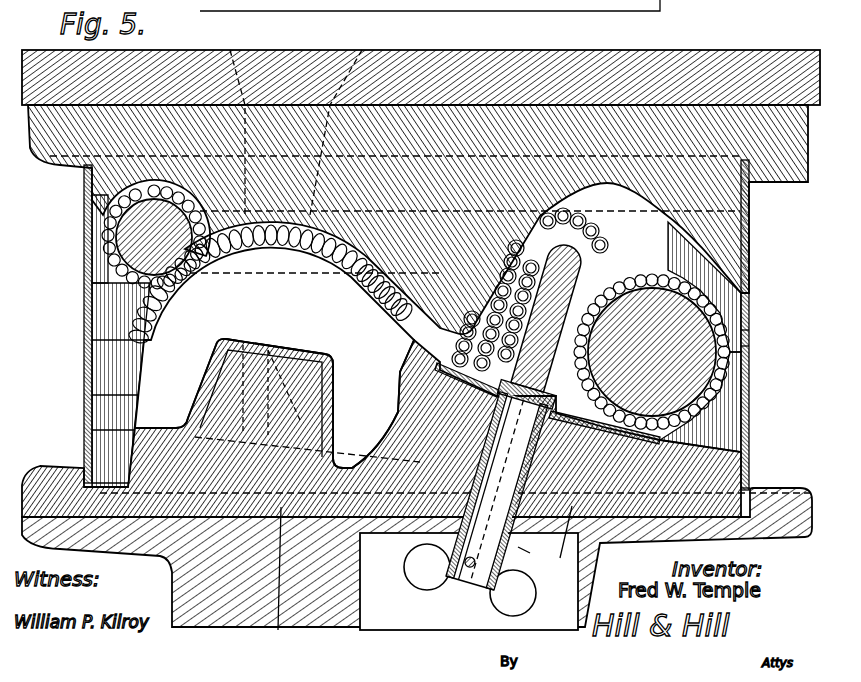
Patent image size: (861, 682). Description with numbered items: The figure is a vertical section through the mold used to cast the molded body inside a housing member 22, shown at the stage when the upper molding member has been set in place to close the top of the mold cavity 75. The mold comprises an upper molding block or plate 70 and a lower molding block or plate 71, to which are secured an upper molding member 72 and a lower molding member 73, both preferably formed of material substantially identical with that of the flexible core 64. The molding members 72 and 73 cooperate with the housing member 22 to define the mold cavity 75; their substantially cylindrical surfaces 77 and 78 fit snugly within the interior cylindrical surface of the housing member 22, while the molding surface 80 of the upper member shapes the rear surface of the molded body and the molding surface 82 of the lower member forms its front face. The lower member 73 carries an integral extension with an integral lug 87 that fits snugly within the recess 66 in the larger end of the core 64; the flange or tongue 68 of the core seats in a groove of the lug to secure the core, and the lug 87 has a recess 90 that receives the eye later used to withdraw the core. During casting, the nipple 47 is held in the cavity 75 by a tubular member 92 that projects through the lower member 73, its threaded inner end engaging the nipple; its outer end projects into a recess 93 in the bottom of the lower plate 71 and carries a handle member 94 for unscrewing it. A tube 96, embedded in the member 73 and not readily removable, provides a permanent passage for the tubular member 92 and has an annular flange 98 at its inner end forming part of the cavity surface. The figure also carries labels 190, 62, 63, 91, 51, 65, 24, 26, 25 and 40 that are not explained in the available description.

The upper molding block or plate 70 is at (448, 58).
The upper molding member 72 is at (448, 110).
The oblique passage 190 is at (304, 123).
The left pin 62 is at (94, 223).
The flexible core 64 is at (175, 303).
The molding surface 80 is at (256, 233).
The coil ring 63 is at (320, 250).
The recess 66 is at (226, 337).
The lug 87 is at (222, 387).
The recess 90 is at (262, 347).
The dog face 91 is at (290, 350).
The flange or tongue 68 is at (333, 362).
The coil spring 51 is at (530, 289).
The coil ring on roller 65 is at (643, 257).
The cylindrical surface 77 is at (752, 183).
The side wall 24 is at (750, 212).
The housing member 22 is at (750, 254).
The mold cavity 75 is at (705, 267).
The wall rib 26 is at (752, 332).
The wall groove 25 is at (752, 346).
The molding surface 82 is at (737, 443).
The cylindrical surface 78 is at (745, 488).
The guide tube 40 is at (503, 403).
The nipple 47 is at (503, 416).
The tube 96 is at (443, 506).
The handle member 94 is at (507, 601).
The tubular member 92 is at (534, 556).
The annular flange 98 is at (558, 542).
The recess 93 is at (362, 622).
The lower molding block or plate 71 is at (232, 600).
The lower molding member 73 is at (271, 579).